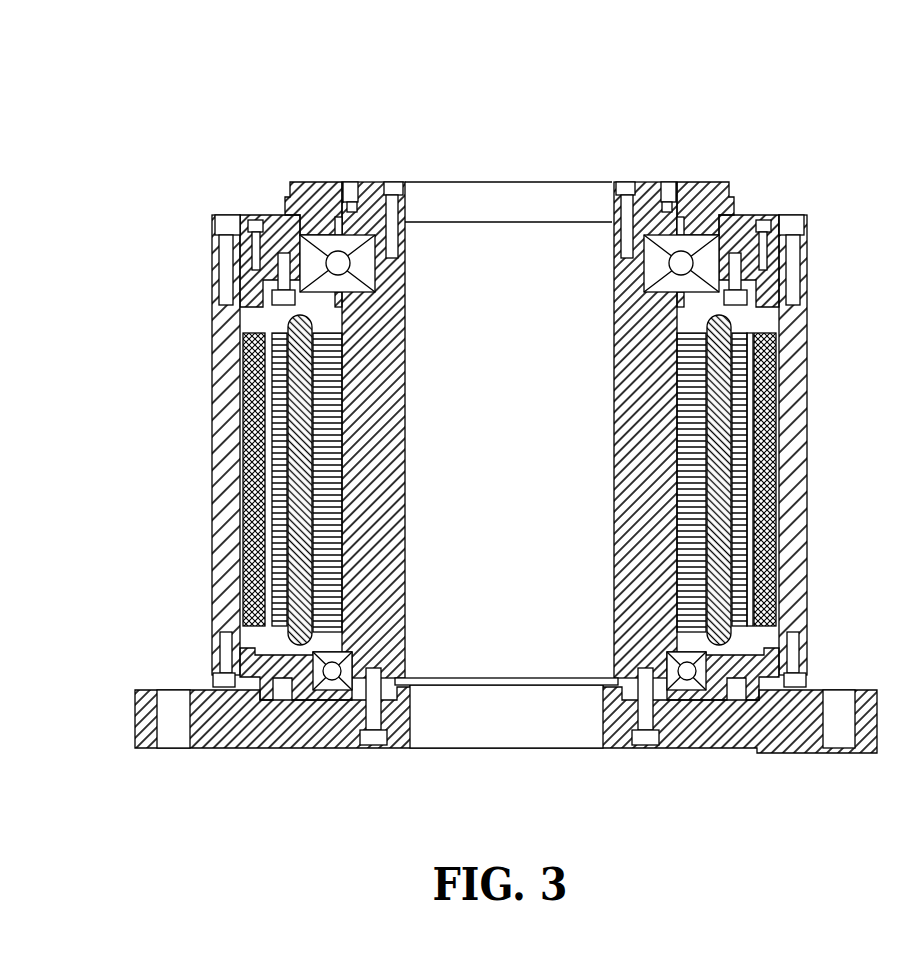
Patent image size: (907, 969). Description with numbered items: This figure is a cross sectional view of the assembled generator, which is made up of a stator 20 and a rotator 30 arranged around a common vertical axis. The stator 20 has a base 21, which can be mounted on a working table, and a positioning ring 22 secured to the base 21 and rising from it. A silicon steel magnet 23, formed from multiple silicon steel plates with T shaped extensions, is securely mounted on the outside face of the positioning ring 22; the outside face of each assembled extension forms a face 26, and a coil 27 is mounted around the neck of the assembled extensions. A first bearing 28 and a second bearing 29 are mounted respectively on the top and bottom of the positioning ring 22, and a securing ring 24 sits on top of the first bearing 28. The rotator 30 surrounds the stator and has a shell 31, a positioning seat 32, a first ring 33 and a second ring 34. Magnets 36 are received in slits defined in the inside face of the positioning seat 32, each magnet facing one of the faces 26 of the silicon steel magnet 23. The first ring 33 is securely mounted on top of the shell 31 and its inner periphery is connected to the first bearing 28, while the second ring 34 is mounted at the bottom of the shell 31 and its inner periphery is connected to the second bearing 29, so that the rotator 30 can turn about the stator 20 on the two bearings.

The stator 20 is at (614, 178).
The base 21 is at (780, 730).
The positioning ring 22 is at (613, 276).
The silicon steel magnet 23 is at (690, 572).
The securing ring 24 is at (688, 182).
The face 26 is at (743, 499).
The coil 27 is at (297, 603).
The first bearing 28 is at (350, 242).
The second bearing 29 is at (680, 684).
The rotator 30 is at (198, 328).
The shell 31 is at (226, 386).
The positioning seat 32 is at (240, 467).
The first ring 33 is at (278, 215).
The second ring 34 is at (260, 668).
The magnets 36 is at (255, 562).